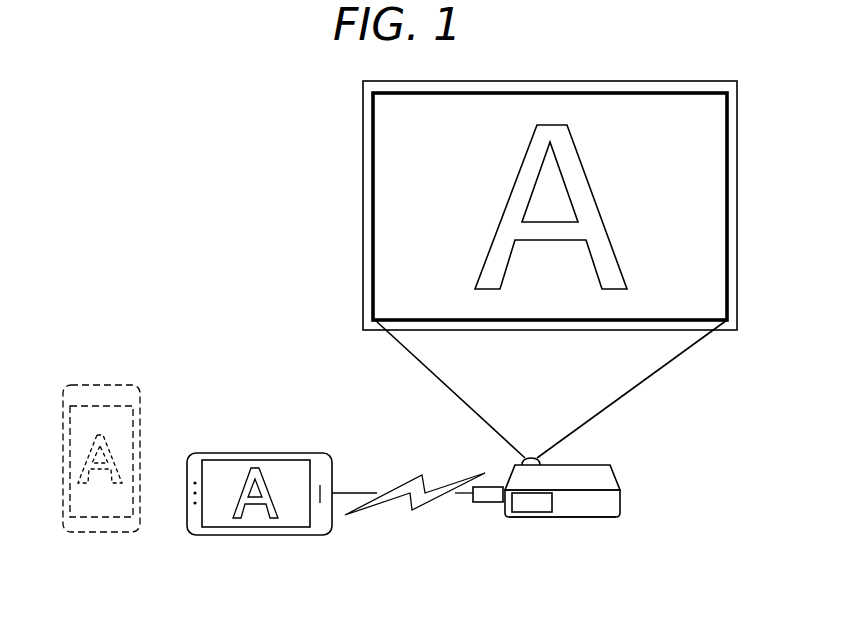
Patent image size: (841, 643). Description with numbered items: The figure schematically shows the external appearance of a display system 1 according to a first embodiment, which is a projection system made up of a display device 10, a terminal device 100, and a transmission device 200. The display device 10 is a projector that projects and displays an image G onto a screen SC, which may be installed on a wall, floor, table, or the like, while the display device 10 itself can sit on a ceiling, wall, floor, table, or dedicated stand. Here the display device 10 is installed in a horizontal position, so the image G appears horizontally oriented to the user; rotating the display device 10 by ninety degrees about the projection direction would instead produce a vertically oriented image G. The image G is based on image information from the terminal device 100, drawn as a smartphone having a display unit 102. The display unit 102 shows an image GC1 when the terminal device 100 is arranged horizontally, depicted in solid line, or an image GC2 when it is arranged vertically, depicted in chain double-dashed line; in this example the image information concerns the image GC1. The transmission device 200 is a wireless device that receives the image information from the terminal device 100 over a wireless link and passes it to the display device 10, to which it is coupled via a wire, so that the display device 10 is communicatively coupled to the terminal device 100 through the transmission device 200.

The display system 1 is at (120, 147).
The screen SC is at (362, 190).
The image G is at (371, 215).
The display device 10 is at (614, 477).
The transmission device 200 is at (497, 483).
The terminal device 100 is at (294, 452).
The display unit 102 is at (213, 457).
The image GC1 is at (235, 456).
The image GC2 is at (110, 397).